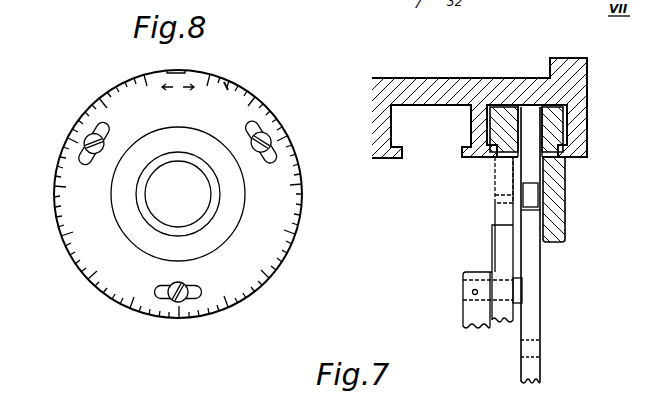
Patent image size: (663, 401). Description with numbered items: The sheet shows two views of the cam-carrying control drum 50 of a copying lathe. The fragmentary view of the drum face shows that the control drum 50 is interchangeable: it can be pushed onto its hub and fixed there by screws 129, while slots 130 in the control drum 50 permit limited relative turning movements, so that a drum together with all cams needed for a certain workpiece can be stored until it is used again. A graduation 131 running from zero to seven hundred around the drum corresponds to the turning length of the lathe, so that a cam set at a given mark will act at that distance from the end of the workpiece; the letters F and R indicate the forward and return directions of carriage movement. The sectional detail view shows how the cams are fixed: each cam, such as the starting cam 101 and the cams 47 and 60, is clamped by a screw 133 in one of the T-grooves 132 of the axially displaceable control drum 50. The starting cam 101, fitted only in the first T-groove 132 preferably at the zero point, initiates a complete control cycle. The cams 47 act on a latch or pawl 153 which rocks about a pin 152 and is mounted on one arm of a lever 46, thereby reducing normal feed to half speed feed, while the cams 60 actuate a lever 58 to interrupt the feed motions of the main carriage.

In FIG. 8, the control drum 50 is at (282, 157).
In FIG. 7, the control drum 50 is at (577, 87).
In FIG. 8, the screws 129 is at (80, 132).
In FIG. 8, the slots 130 is at (78, 148).
In FIG. 8, the graduation 131 is at (230, 82).
In FIG. 7, the T-grooves 132 is at (550, 105).
In FIG. 7, the screws 133 is at (532, 127).
In FIG. 7, the starting cam 101 is at (546, 203).
In FIG. 7, the lever 58 is at (532, 365).
In FIG. 7, the cams 60 is at (528, 183).
In FIG. 7, the cams 47 is at (513, 180).
In FIG. 7, the latch or pawl 153 is at (508, 243).
In FIG. 7, the lever 46 is at (481, 313).
In FIG. 7, the pin 152 is at (473, 290).